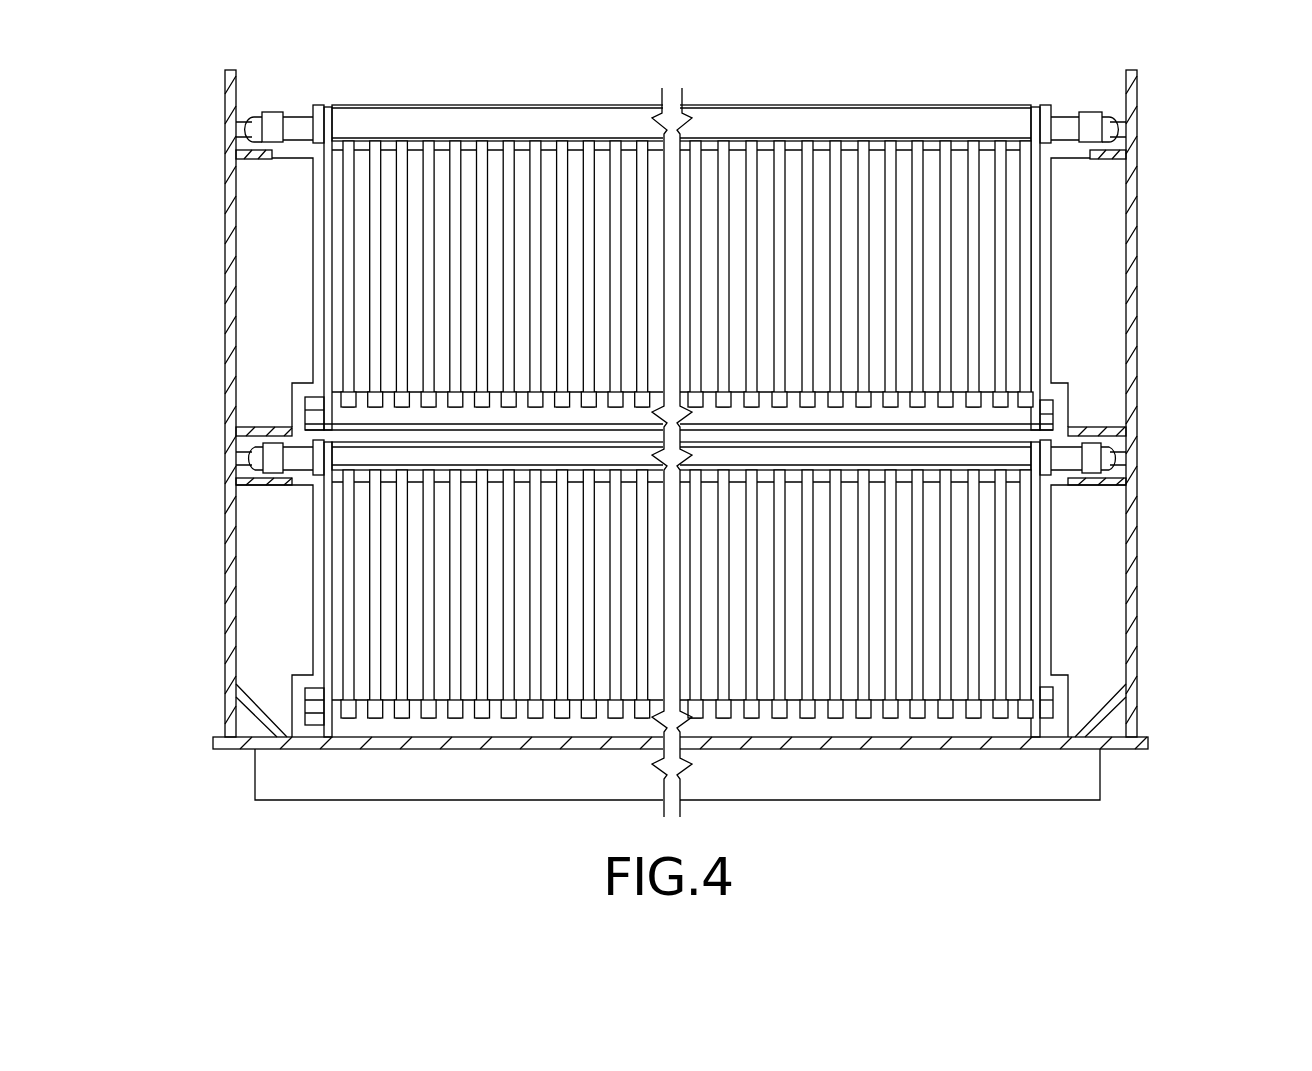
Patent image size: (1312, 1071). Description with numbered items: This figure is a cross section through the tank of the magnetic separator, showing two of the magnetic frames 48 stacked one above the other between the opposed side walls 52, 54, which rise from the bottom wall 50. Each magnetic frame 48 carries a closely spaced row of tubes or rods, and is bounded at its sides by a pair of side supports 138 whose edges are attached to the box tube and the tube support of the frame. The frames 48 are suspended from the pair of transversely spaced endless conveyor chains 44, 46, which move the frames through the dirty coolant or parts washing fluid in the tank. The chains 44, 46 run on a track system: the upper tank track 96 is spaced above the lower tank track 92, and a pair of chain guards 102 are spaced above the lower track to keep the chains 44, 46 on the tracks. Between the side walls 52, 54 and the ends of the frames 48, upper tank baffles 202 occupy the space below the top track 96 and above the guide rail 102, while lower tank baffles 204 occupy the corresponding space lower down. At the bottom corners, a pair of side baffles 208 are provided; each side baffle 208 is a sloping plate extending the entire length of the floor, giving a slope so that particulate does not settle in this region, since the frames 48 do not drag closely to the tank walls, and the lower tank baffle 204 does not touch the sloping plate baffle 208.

The endless conveyor chain 44 is at (1105, 118).
The endless conveyor chain 46 is at (273, 118).
The magnetic frame 48 is at (410, 140).
The bottom wall 50 is at (385, 735).
The side wall 52 is at (1137, 210).
The side wall 54 is at (226, 268).
The lower tank track 92 is at (265, 486).
The upper tank track 96 is at (258, 157).
The chain guard 102 is at (265, 413).
The side support 138 is at (325, 340).
The upper tank baffle 202 is at (272, 232).
The lower tank baffle 204 is at (265, 575).
The side baffle 208 is at (255, 722).